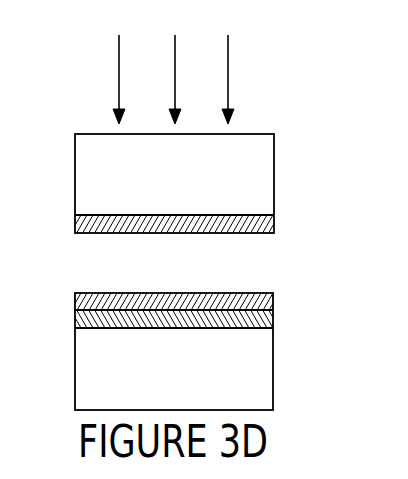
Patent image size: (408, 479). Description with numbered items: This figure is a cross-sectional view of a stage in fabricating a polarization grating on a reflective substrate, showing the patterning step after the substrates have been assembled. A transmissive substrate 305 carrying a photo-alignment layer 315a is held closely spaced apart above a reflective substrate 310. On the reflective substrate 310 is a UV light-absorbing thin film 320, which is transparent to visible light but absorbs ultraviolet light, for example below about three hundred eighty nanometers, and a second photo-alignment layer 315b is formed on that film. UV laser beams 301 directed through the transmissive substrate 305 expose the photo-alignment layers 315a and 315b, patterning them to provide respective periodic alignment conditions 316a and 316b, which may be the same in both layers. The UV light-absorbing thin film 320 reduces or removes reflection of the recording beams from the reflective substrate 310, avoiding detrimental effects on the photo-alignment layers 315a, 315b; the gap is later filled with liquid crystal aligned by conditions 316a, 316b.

The UV laser beams 301 is at (231, 72).
The transmissive substrate 305 is at (153, 212).
The reflective substrate 310 is at (199, 402).
The photo-alignment layer 315a is at (75, 225).
The periodic alignment condition 316a is at (305, 210).
The photo-alignment layer 315b is at (143, 293).
The periodic alignment condition 316b is at (273, 303).
The UV light-absorbing thin film 320 is at (74, 325).